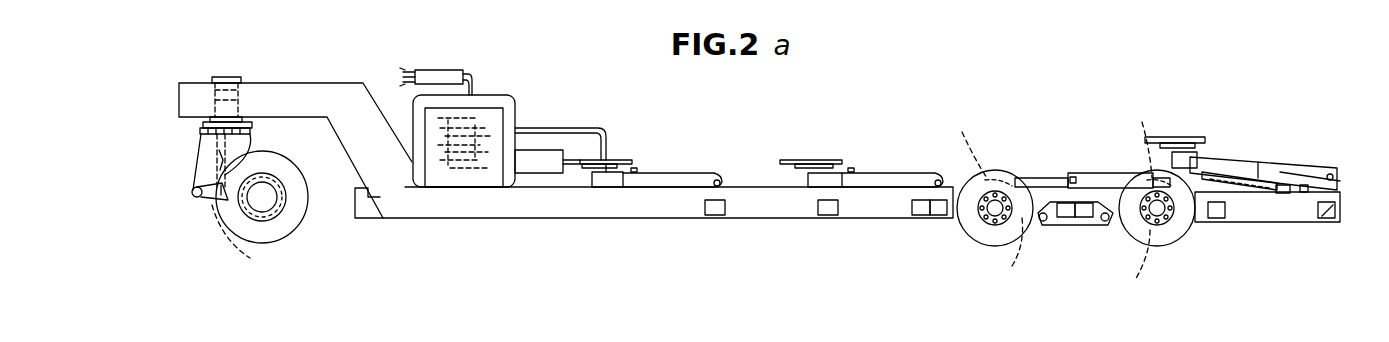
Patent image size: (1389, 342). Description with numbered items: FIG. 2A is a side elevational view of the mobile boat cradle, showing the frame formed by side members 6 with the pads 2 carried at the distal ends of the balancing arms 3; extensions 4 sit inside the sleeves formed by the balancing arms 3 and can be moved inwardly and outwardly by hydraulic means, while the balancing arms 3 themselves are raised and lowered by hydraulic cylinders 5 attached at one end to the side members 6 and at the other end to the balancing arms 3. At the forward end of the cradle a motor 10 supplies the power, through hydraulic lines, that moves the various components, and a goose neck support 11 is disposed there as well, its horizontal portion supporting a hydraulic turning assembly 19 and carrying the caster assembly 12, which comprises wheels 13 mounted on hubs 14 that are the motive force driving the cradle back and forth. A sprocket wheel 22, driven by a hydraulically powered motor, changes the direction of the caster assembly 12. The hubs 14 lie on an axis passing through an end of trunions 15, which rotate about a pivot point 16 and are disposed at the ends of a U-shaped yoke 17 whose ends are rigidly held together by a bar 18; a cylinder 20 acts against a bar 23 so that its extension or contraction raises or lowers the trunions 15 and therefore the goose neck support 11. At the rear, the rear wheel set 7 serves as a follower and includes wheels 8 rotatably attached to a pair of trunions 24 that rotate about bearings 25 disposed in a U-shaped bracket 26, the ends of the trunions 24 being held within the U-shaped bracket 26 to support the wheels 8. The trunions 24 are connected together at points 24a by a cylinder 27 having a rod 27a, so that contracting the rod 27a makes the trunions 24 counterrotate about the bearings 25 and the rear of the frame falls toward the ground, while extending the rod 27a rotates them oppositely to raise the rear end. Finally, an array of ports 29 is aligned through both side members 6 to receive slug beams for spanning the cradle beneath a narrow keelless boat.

The pads 2 is at (582, 160).
The balancing arms 3 is at (650, 175).
The extensions 4 is at (610, 186).
The hydraulic cylinders 5 is at (1243, 186).
The side members 6 is at (657, 220).
The rear wheel set 7 is at (1072, 278).
The wheels 8 is at (985, 238).
The motor 10 is at (475, 92).
The goose neck support 11 is at (340, 75).
The caster assembly 12 is at (256, 126).
The wheels 13 is at (290, 215).
The hubs 14 is at (262, 197).
The trunions 15 is at (243, 239).
The pivot point 16 is at (195, 205).
The U-shaped yoke 17 is at (200, 140).
The bar 18 is at (205, 178).
The hydraulic turning assembly 19 is at (232, 77).
The cylinder 20 is at (216, 152).
The sprocket wheel 22 is at (212, 100).
The bar 23 is at (222, 215).
The trunions 24 is at (1079, 261).
The points 24a is at (1058, 143).
The bearings 25 is at (1044, 222).
The U-shaped bracket 26 is at (1065, 228).
The cylinder 27 is at (1085, 172).
The rod 27a is at (1040, 177).
The ports 29 is at (718, 215).